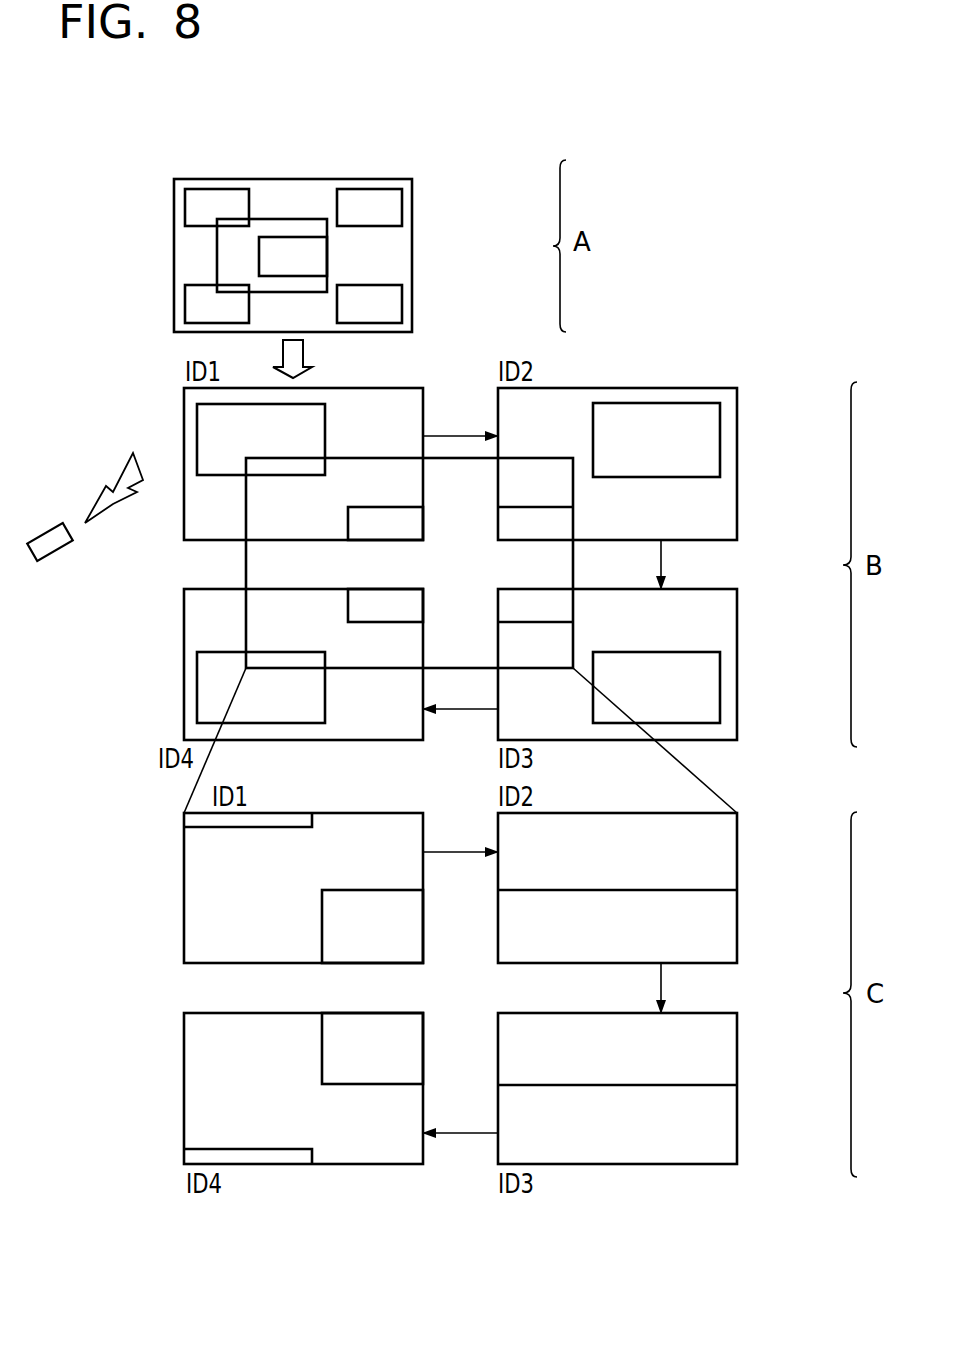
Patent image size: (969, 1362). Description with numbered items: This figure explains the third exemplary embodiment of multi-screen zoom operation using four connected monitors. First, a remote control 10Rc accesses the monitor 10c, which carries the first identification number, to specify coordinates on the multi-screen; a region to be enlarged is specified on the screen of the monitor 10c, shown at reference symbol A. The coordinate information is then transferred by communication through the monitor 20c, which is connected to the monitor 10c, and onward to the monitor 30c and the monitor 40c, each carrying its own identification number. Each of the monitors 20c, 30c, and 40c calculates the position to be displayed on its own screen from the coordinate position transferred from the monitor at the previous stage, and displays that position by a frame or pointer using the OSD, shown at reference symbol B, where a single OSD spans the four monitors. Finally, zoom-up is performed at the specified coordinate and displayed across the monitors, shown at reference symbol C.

The monitor 10c is at (412, 253).
The remote control 10Rc is at (40, 535).
The monitor 20c is at (737, 487).
The monitor 30c is at (737, 677).
The monitor 40c is at (184, 684).